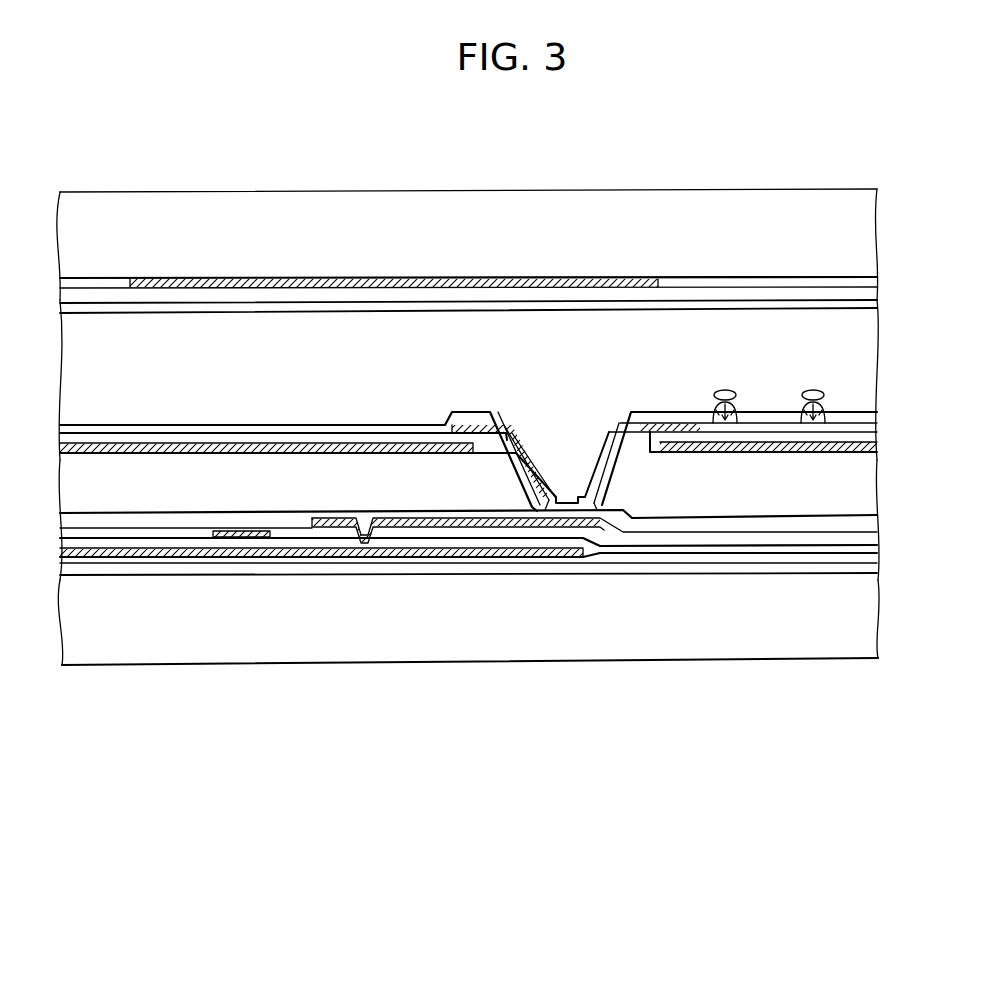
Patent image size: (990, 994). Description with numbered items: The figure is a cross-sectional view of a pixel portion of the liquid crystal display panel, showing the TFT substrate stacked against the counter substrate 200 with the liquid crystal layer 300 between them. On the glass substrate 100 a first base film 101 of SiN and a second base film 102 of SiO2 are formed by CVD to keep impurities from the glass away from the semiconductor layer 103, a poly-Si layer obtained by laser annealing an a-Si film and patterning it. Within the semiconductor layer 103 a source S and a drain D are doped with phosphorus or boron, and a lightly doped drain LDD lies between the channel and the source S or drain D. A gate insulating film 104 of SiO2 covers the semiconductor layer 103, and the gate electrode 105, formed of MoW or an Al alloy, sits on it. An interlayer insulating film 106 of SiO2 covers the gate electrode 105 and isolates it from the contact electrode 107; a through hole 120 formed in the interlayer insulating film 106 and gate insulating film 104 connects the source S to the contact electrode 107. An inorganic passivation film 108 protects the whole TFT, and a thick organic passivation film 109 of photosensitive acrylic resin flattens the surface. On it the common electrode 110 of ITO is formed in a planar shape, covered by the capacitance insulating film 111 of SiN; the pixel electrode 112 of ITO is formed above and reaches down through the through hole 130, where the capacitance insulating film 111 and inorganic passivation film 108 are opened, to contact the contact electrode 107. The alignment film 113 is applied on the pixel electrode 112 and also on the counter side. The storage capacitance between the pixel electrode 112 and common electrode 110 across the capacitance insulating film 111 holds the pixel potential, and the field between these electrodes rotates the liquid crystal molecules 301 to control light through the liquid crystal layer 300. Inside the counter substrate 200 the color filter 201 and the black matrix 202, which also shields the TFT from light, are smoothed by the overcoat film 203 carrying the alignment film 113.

The glass substrate 100 is at (865, 612).
The first base film 101 is at (548, 576).
The second base film 102 is at (612, 564).
The semiconductor layer 103 is at (228, 558).
The gate insulating film 104 is at (680, 554).
The gate electrode 105 is at (245, 538).
The interlayer insulating film 106 is at (745, 546).
The contact electrode 107 is at (463, 528).
The inorganic passivation film 108 is at (812, 533).
The organic passivation film 109 is at (863, 483).
The common electrode 110 is at (336, 443).
The capacitance insulating film 111 is at (405, 433).
The pixel electrode 112 is at (462, 425).
The alignment film 113 is at (593, 310).
The through hole 120 is at (348, 518).
The through hole 130 is at (563, 494).
The counter substrate 200 is at (865, 233).
The color filter 201 is at (105, 285).
The black matrix 202 is at (446, 283).
The overcoat film 203 is at (863, 290).
The liquid crystal layer 300 is at (863, 357).
The liquid crystal molecule 301 is at (812, 390).
The drain D is at (120, 558).
The lightly doped drain layer LDD is at (173, 558).
The source S is at (347, 558).